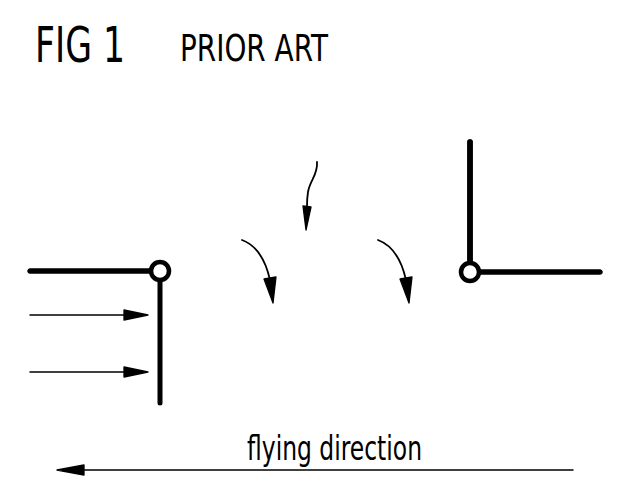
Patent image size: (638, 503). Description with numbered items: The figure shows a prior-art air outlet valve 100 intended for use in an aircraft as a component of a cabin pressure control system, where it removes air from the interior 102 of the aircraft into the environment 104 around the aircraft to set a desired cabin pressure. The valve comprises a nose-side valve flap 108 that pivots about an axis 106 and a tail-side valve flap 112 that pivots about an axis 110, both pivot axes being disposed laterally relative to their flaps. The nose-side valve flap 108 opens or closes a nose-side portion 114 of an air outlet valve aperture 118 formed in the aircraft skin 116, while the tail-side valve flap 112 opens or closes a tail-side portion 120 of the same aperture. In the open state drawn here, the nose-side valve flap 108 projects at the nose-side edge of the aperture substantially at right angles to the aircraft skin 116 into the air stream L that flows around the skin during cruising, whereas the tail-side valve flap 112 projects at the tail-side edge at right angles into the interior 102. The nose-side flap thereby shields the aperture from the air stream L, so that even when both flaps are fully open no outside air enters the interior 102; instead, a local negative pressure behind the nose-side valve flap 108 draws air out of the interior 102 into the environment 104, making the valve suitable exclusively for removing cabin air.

The air outlet valve 100 is at (528, 120).
The interior of the aircraft 102 is at (582, 247).
The environment around the aircraft 104 is at (583, 361).
The axis 106 is at (157, 261).
The nose-side valve flap 108 is at (163, 347).
The axis 110 is at (470, 285).
The tail-side valve flap 112 is at (473, 190).
The nose-side portion of the air outlet valve aperture 114 is at (212, 258).
The aircraft skin 116 is at (56, 268).
The air outlet valve aperture 118 is at (315, 177).
The tail-side portion of the air outlet valve aperture 120 is at (366, 258).
The air stream L is at (82, 373).